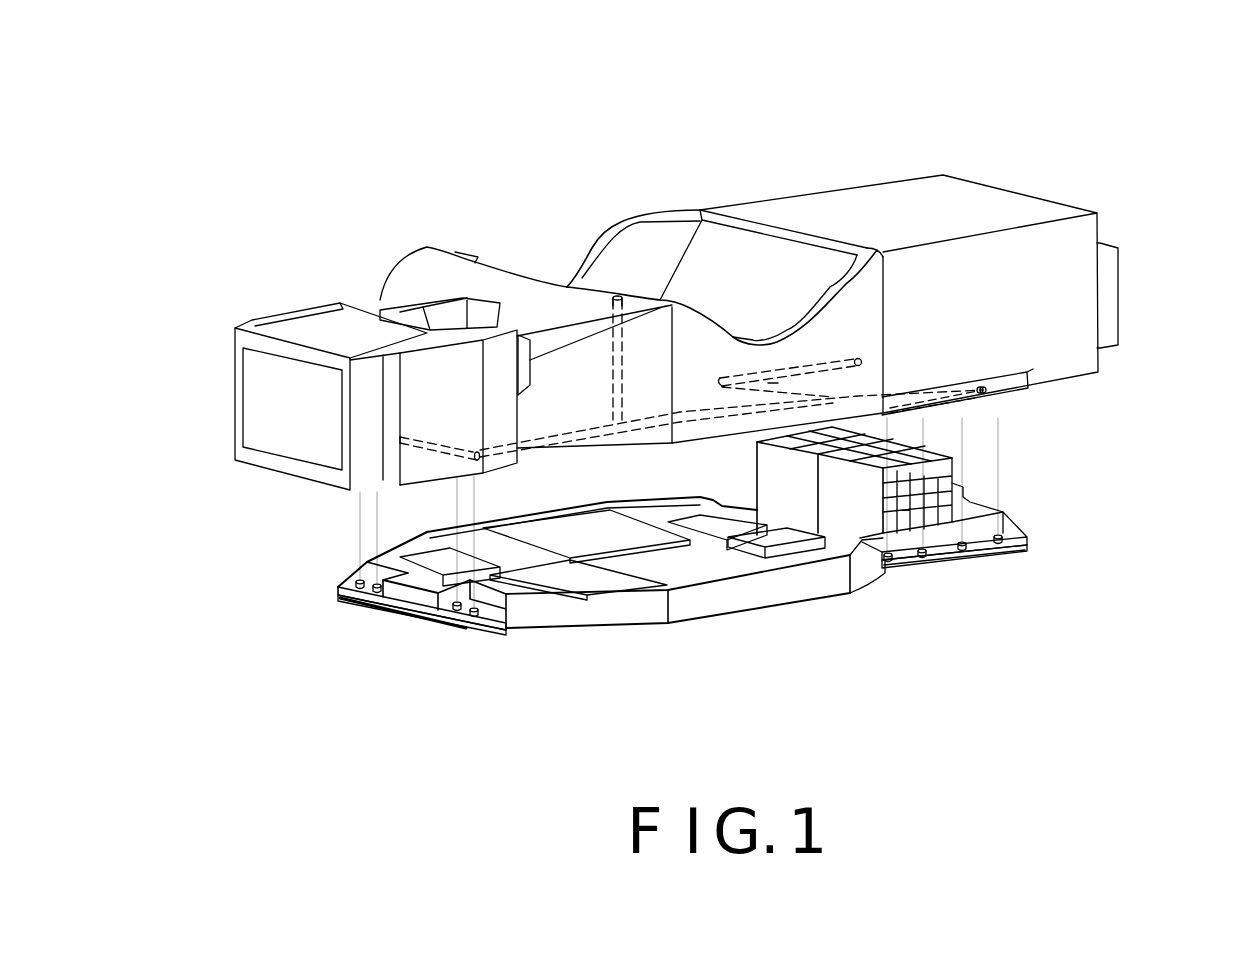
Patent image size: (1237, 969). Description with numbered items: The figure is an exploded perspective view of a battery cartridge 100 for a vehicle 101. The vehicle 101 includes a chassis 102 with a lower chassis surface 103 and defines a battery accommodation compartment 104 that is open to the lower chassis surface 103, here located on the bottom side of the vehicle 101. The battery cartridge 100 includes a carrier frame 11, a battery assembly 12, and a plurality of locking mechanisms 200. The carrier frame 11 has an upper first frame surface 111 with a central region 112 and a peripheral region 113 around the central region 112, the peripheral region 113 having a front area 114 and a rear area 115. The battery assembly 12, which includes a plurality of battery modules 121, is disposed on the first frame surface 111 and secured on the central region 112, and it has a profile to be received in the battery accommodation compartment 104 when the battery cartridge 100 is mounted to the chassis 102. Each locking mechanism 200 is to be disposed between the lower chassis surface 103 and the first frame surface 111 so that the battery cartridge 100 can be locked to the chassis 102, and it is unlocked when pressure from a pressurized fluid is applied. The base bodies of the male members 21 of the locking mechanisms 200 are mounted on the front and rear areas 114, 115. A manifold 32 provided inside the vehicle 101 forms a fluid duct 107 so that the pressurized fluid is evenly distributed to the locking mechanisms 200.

The battery cartridge 100 is at (1040, 550).
The vehicle 101 is at (252, 181).
The chassis 102 is at (270, 472).
The lower chassis surface 103 is at (1077, 377).
The battery accommodation compartment 104 is at (1027, 399).
The fluid duct 107 is at (773, 383).
The manifold 32 is at (685, 408).
The carrier frame 11 is at (567, 633).
The first frame surface 111 is at (348, 584).
The central region 112 is at (590, 557).
The peripheral region 113 is at (1030, 538).
The front area 114 is at (445, 613).
The rear area 115 is at (980, 550).
The battery assembly 12 is at (1010, 500).
The battery modules 121 is at (625, 531).
The male members 21 is at (362, 590).
The locking mechanism 200 is at (463, 630).